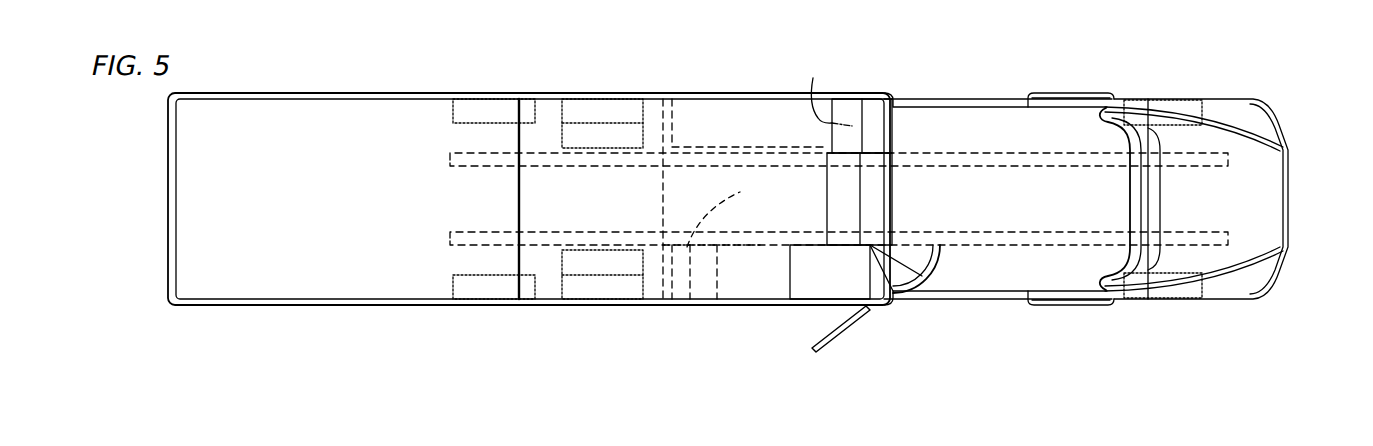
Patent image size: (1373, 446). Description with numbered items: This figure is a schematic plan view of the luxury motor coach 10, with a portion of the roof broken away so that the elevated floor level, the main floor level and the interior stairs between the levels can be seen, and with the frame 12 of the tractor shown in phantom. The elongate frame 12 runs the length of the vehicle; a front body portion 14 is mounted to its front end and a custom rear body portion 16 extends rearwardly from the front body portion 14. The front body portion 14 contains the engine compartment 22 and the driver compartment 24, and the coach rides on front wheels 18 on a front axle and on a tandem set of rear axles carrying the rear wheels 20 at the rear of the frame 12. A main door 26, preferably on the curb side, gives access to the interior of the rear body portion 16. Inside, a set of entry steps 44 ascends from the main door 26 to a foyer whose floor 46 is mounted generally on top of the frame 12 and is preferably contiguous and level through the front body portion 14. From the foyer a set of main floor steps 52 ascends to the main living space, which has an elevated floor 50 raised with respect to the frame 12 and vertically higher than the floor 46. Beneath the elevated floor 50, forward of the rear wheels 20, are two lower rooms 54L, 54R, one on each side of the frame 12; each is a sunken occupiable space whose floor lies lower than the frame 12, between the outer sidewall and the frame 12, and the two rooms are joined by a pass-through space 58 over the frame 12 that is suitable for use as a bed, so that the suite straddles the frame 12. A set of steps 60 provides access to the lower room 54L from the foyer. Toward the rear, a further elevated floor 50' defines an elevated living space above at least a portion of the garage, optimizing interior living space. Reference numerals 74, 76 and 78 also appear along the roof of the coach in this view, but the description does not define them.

The motor coach 10 is at (1263, 76).
The frame 12 is at (1010, 150).
The front body portion 14 is at (1090, 82).
The rear body portion 16 is at (277, 311).
The front wheels 18 is at (1194, 330).
The rear wheels 20 is at (598, 330).
The engine compartment 22 is at (1258, 198).
The driver compartment 24 is at (1075, 262).
The main door 26 is at (842, 338).
The entry steps 44 is at (942, 330).
The floor 46 is at (965, 214).
The elevated floor 50 is at (630, 201).
The elevated floor 50' is at (294, 202).
The main floor steps 52 is at (873, 197).
The lower room 54L is at (760, 107).
The lower room 54R is at (760, 330).
The pass-through space 58 is at (720, 0).
The set of steps 60 is at (822, 87).
The roof element 74 is at (238, 17).
The roof element 76 is at (403, 17).
The roof element 78 is at (302, 17).